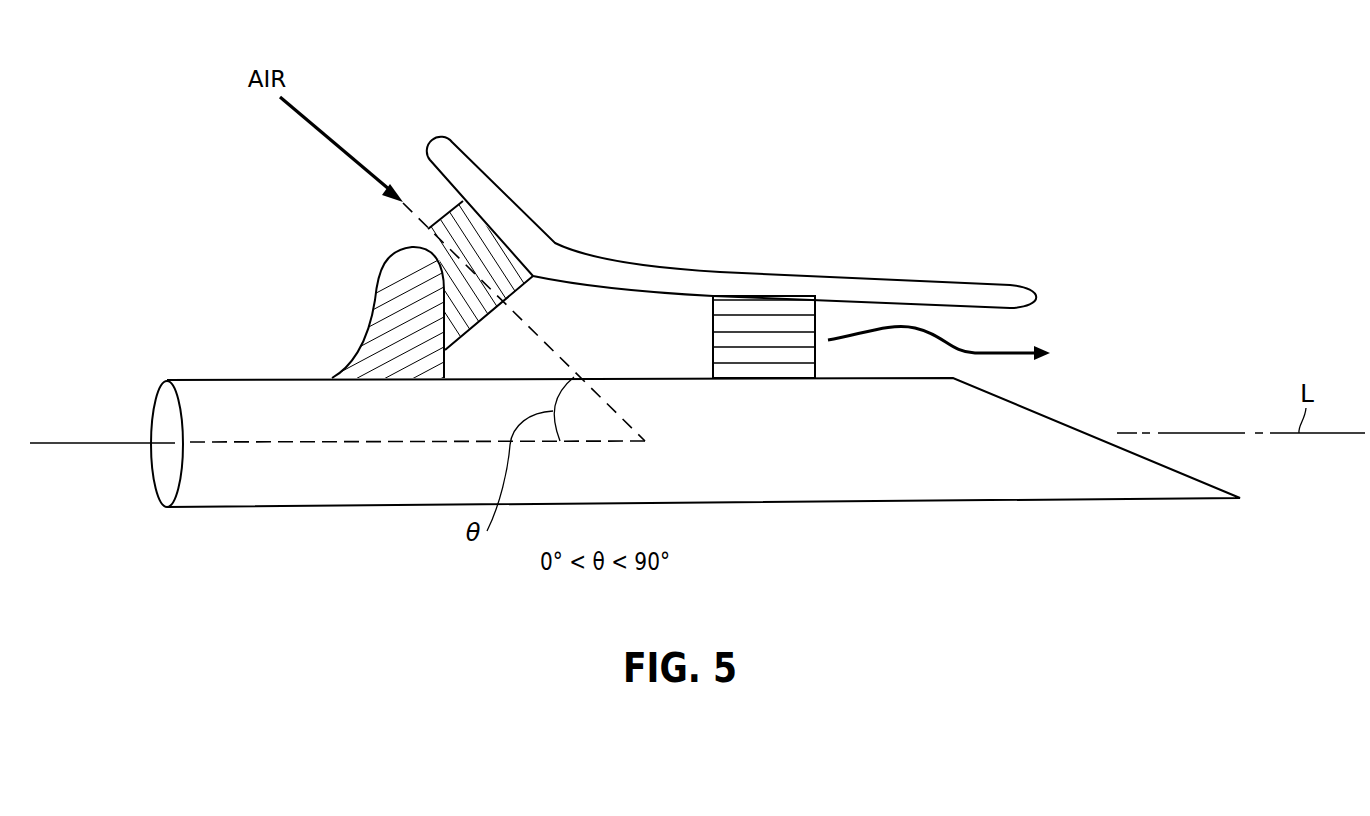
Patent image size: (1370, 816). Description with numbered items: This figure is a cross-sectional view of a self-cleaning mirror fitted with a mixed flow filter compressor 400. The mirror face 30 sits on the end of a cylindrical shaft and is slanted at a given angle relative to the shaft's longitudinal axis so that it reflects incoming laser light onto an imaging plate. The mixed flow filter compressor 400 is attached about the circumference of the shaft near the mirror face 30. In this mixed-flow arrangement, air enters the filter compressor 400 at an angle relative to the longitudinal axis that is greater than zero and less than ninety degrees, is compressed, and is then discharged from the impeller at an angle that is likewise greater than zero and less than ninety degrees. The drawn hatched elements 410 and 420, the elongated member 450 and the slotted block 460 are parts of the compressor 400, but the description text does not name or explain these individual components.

The mirror face 30 is at (1088, 432).
The mixed flow filter compressor 400 is at (725, 95).
The base block 410 is at (390, 310).
The inclined slotted member 420 is at (480, 240).
The fin / deflector 450 is at (653, 278).
The slotted outlet block 460 is at (766, 308).